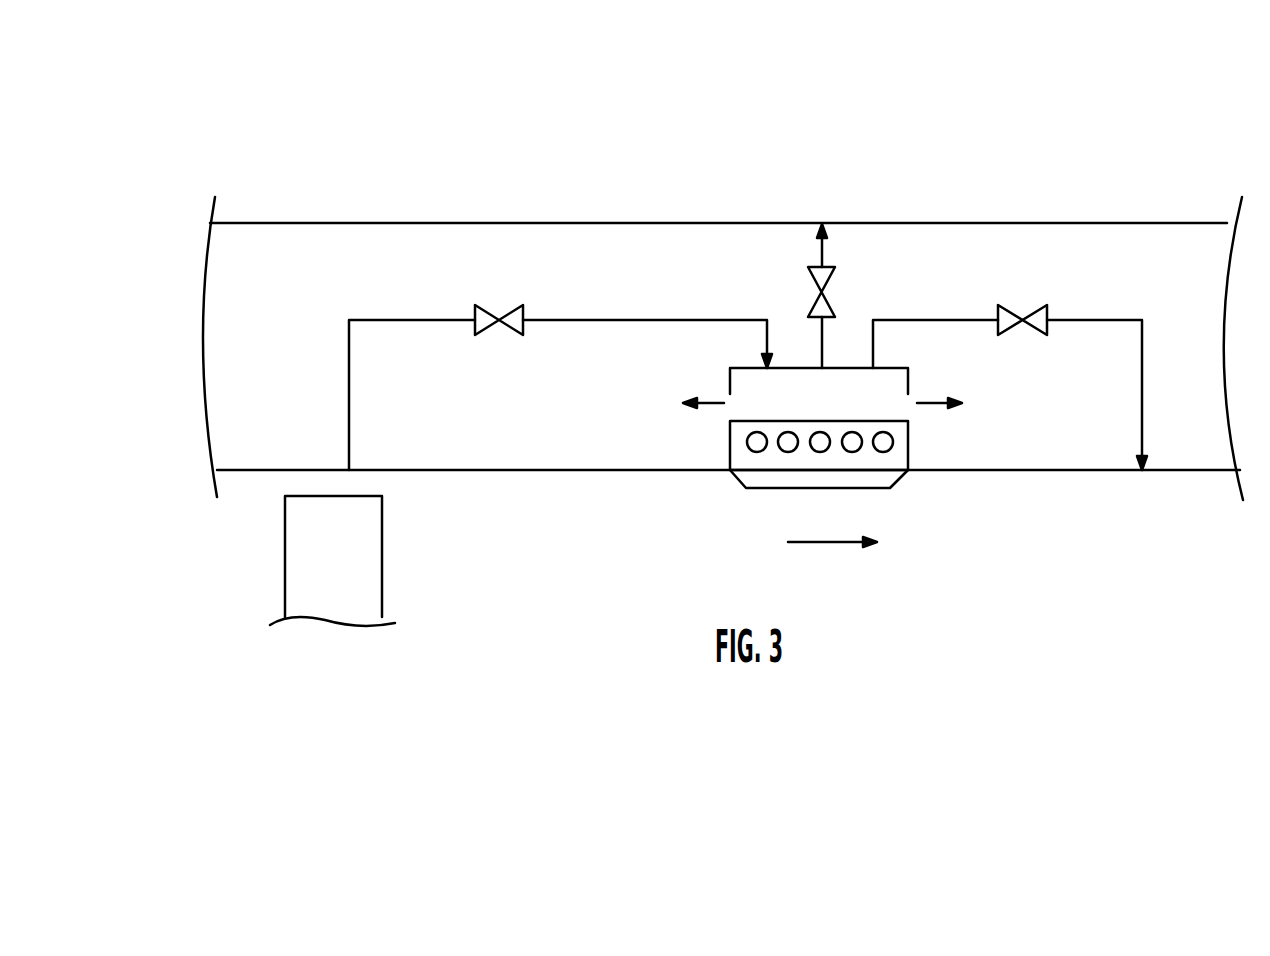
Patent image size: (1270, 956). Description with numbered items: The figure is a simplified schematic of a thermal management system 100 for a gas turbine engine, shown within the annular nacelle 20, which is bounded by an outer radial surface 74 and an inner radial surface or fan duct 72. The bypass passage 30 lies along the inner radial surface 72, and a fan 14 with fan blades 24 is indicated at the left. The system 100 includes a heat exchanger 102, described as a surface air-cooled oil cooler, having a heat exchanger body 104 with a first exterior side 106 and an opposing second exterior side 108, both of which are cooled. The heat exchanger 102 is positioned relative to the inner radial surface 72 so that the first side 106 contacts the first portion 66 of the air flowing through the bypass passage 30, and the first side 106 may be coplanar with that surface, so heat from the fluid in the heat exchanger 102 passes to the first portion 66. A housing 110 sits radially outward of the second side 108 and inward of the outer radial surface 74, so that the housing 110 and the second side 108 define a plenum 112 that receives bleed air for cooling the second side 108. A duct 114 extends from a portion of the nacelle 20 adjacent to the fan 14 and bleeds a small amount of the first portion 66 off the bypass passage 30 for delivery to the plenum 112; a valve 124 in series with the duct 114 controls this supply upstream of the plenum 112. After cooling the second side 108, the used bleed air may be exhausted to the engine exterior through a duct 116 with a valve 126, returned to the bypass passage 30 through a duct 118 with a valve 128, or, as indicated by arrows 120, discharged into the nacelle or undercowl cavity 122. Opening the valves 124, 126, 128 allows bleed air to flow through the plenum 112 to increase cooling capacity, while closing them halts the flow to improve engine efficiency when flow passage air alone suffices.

The thermal management system 100 is at (218, 101).
The nacelle 20 is at (534, 211).
The outer radial surface 74 is at (357, 223).
The inner radial surface 72 is at (578, 470).
The bypass passage 30 is at (1046, 514).
The fan 14 is at (222, 585).
The fan blades 24 is at (346, 574).
The duct 114 is at (398, 320).
The valve 124 is at (497, 320).
The duct 118 is at (1118, 320).
The valve 128 is at (1043, 279).
The duct 116 is at (820, 257).
The valve 126 is at (883, 277).
The heat exchanger 102 is at (814, 435).
The housing 110 is at (738, 368).
The plenum 112 is at (819, 387).
The second exterior side 108 is at (853, 421).
The heat exchanger body 104 is at (730, 458).
The first exterior side 106 is at (757, 470).
The arrows 120 is at (711, 403).
The undercowl cavity 122 is at (711, 451).
The first portion of the air 66 is at (835, 543).